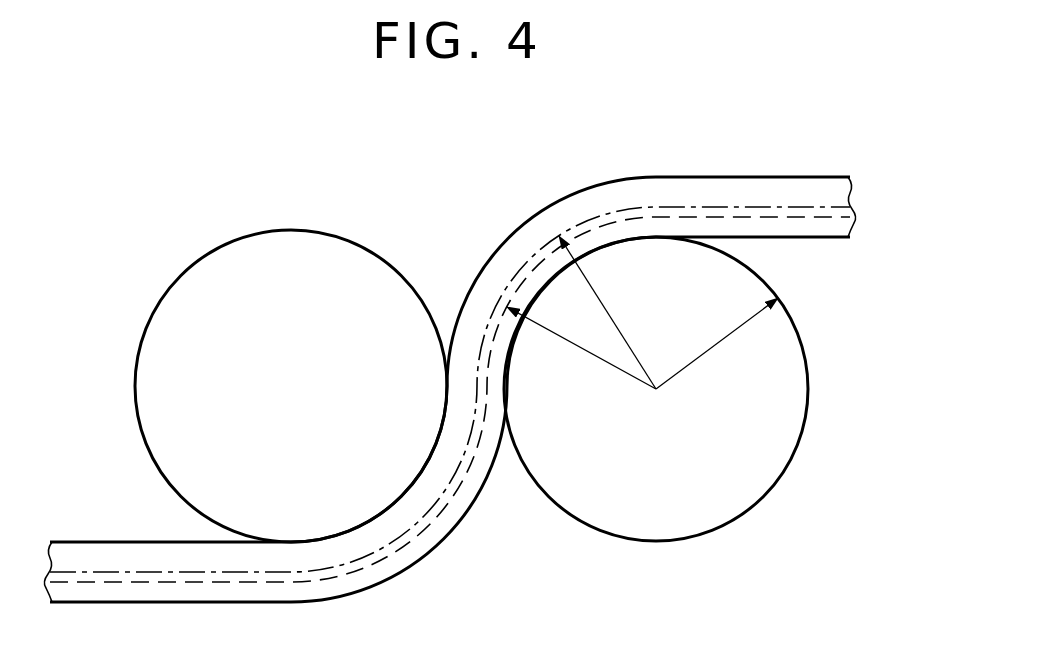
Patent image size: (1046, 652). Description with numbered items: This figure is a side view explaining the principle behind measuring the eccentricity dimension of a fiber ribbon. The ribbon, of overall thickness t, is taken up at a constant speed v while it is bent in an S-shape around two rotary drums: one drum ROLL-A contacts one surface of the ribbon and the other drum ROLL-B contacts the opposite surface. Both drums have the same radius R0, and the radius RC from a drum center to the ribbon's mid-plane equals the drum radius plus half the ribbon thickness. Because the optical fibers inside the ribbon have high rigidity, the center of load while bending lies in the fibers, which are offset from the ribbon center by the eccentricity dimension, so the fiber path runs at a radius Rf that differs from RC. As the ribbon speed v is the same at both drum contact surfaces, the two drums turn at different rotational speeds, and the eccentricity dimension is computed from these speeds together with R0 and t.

The rotary drum ROLL-A is at (280, 263).
The rotary drum ROLL-B is at (725, 492).
The radius of rotary drum R0 is at (369, 251).
The radius to fiber ribbon center RC is at (455, 473).
The radius to optical fibers Rf is at (423, 531).
The overall thickness of fiber ribbon t is at (100, 638).
The take-up speed of fiber ribbon v is at (665, 148).